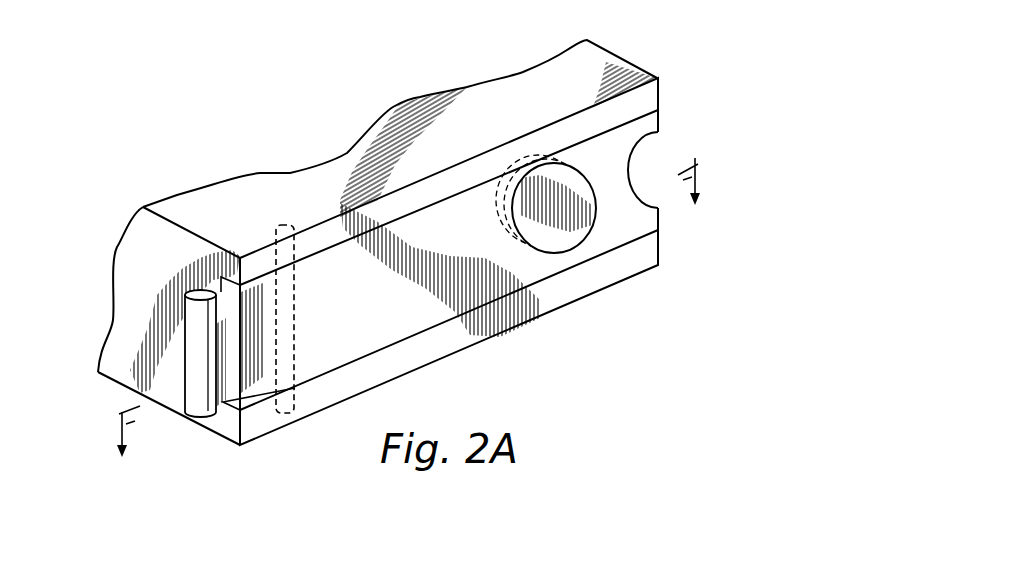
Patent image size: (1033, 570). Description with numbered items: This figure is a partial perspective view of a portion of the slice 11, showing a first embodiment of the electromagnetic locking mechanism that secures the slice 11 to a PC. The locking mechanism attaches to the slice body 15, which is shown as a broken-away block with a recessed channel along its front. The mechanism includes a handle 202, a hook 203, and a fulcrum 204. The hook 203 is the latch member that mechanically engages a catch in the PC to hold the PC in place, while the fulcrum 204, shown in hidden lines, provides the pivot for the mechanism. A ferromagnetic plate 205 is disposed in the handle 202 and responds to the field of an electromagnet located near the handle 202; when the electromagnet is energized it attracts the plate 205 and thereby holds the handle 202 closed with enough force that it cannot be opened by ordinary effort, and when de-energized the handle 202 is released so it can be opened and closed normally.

The slice 11 is at (278, 107).
The slice body 15 is at (590, 52).
The handle 202 is at (617, 233).
The hook 203 is at (200, 408).
The fulcrum 204 is at (294, 308).
The ferromagnetic plate 205 is at (557, 240).